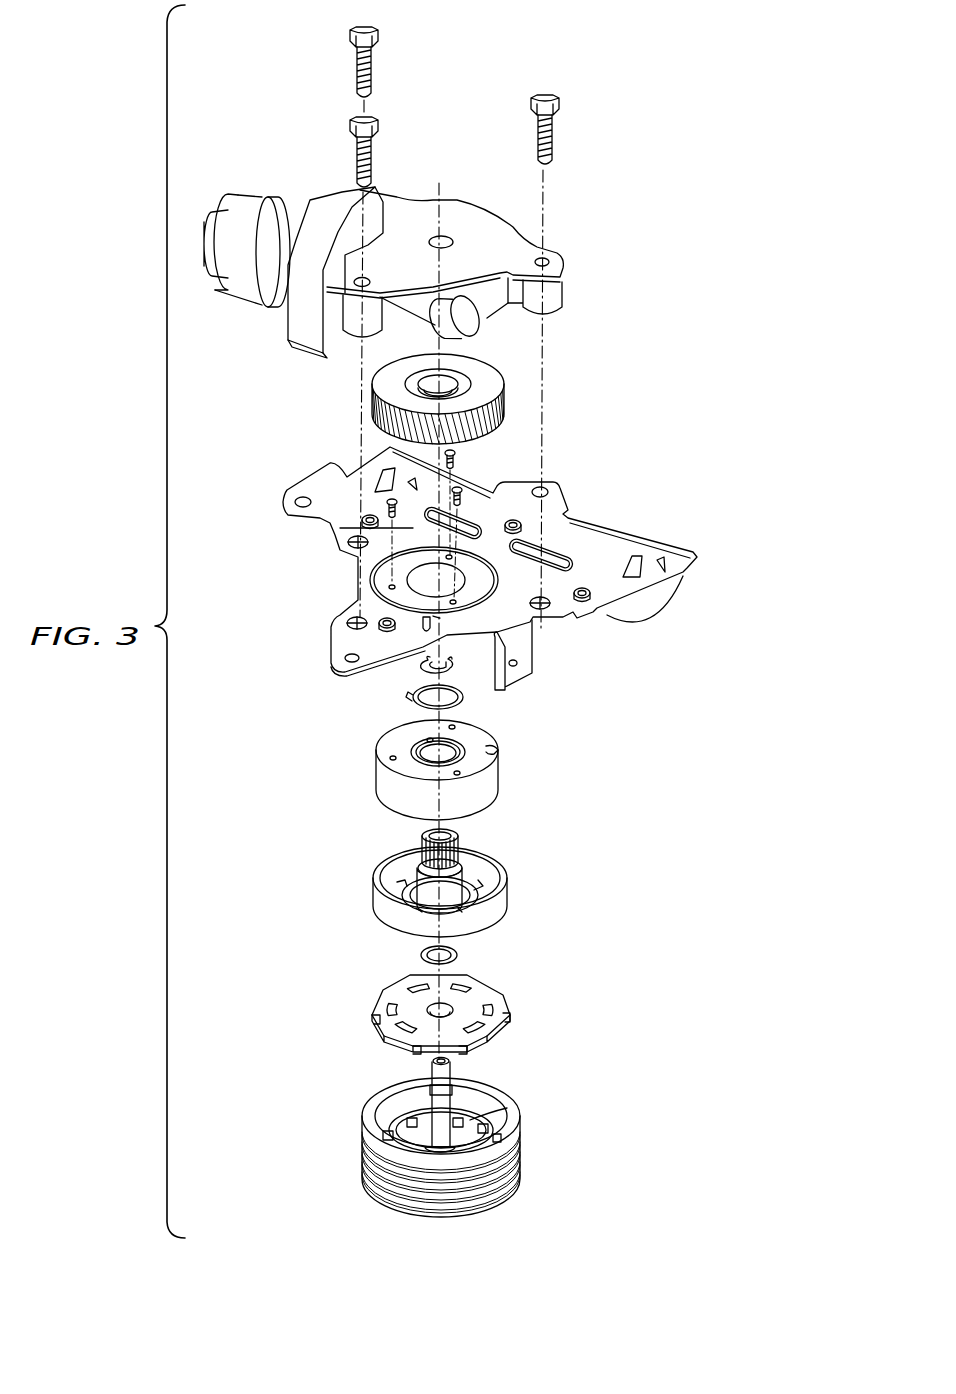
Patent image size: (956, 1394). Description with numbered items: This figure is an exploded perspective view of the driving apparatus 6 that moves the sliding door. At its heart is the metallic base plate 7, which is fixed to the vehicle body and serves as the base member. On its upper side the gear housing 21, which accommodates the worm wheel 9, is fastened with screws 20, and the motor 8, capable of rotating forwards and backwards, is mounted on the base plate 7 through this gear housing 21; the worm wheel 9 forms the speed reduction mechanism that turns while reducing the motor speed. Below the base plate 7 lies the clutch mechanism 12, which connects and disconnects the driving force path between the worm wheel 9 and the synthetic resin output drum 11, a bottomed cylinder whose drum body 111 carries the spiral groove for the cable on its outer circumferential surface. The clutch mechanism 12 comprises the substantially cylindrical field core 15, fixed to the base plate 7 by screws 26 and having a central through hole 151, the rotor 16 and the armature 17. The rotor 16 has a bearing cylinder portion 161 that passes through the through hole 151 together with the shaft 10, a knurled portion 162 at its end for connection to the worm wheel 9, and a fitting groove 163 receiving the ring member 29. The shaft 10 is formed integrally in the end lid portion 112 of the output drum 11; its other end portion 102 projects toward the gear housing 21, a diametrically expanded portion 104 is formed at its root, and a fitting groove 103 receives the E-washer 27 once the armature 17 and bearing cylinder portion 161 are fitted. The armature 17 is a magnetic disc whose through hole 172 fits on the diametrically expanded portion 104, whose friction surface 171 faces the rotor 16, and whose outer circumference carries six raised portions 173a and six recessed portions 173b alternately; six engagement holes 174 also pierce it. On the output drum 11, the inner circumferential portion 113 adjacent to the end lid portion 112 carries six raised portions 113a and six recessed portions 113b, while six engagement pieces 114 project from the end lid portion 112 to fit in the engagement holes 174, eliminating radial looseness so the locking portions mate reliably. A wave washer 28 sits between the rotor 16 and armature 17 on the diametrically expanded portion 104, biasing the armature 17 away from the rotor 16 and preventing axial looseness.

The driving apparatus 6 is at (629, 399).
The base plate 7 is at (627, 537).
The motor 8 is at (283, 205).
The worm wheel 9 is at (490, 372).
The shaft 10 is at (453, 1098).
The output drum 11 is at (441, 1130).
The clutch mechanism 12 is at (518, 864).
The field core 15 is at (495, 741).
The rotor 16 is at (377, 920).
The armature 17 is at (451, 977).
The screws 20 is at (372, 72).
The gear housing 21 is at (465, 200).
The screws 26 is at (388, 498).
The E-washer 27 is at (420, 672).
The wave washer 28 is at (458, 950).
The ring member 29 is at (460, 706).
The another end portion 102 is at (430, 1100).
The fitting groove 103 is at (405, 1120).
The diametrically expanded portion 104 is at (507, 1108).
The laminated core 111 is at (503, 1202).
The end lid portion 112 is at (397, 1135).
The inner circumferential portion 113 is at (487, 1118).
The raised portions 113a is at (403, 1122).
The recessed portions 113b is at (462, 1122).
The engagement pieces 114 is at (470, 1112).
The through hole 151 is at (428, 739).
The bearing cylinder portion 161 is at (470, 871).
The knurled portion 162 is at (421, 838).
The fitting groove 163 is at (413, 877).
The friction surface 171 is at (497, 997).
The through hole 172 is at (427, 1007).
The raised portions 173a is at (403, 978).
The recessed portions 173b is at (382, 998).
The engagement holes 174 is at (427, 980).